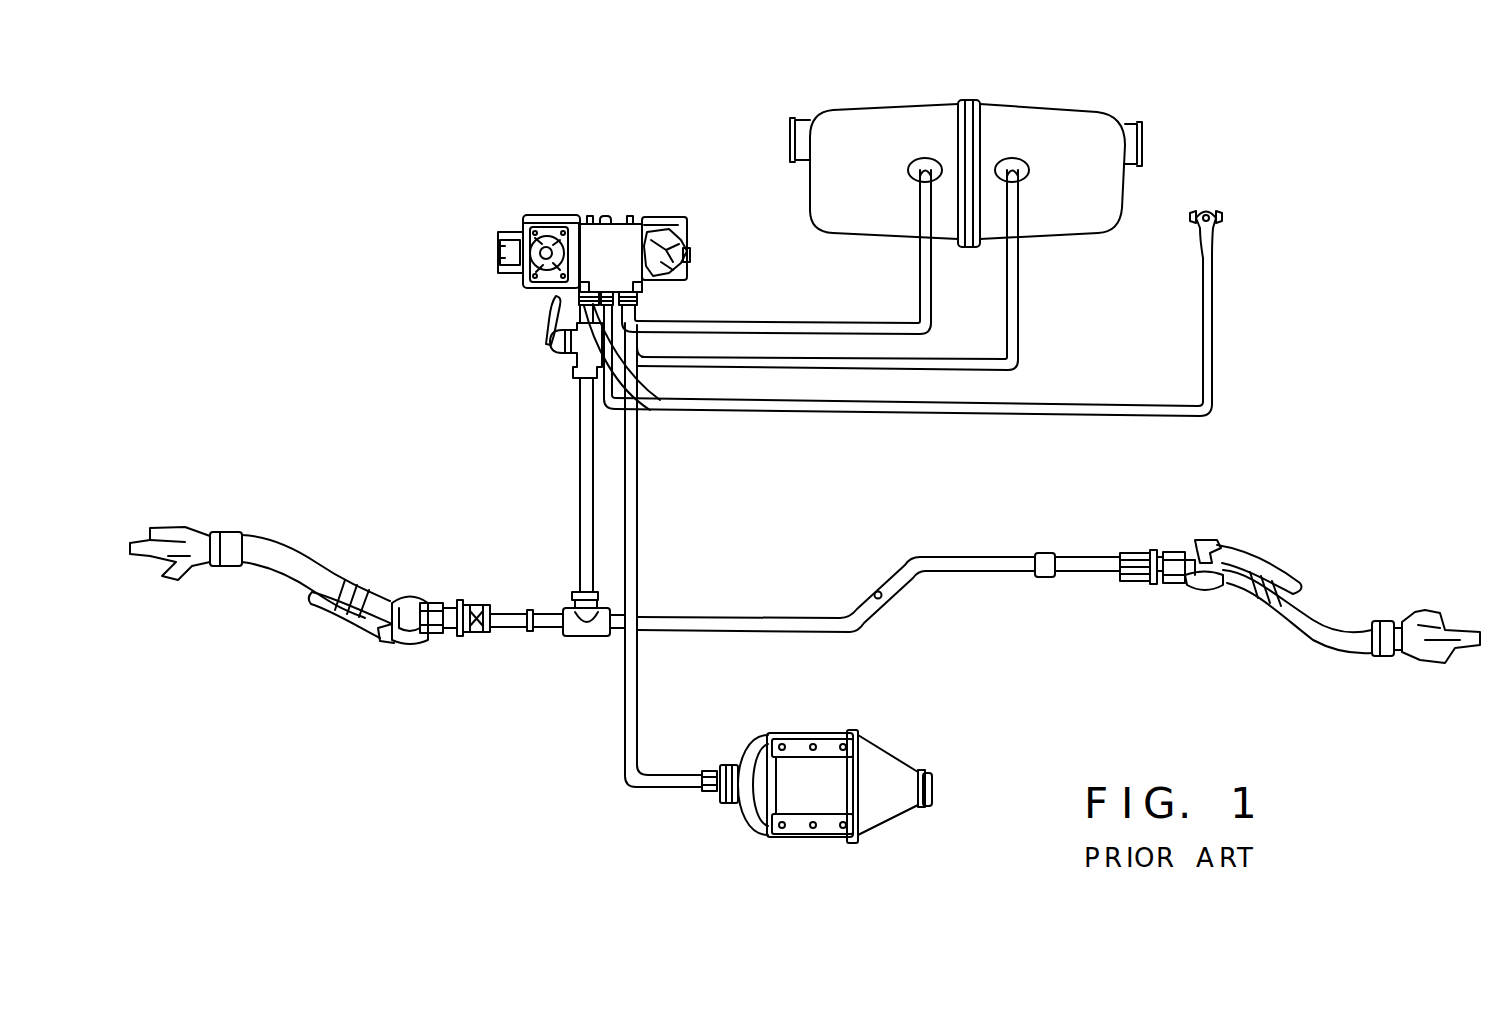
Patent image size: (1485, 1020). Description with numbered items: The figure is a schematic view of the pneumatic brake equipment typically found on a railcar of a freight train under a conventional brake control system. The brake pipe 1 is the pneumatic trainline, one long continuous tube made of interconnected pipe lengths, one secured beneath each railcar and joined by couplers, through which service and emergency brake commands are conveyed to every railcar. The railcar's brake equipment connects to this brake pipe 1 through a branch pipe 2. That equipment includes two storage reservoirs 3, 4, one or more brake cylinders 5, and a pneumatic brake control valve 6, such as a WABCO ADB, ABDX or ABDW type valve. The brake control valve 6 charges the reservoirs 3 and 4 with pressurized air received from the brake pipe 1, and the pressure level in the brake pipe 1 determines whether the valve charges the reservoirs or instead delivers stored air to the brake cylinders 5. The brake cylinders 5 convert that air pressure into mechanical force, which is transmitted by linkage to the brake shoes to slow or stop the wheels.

The brake pipe 1 is at (298, 556).
The branch pipe 2 is at (580, 489).
The storage reservoir 3 is at (1093, 180).
The storage reservoir 4 is at (877, 177).
The brake cylinder 5 is at (883, 765).
The pneumatic brake control valve 6 is at (537, 195).